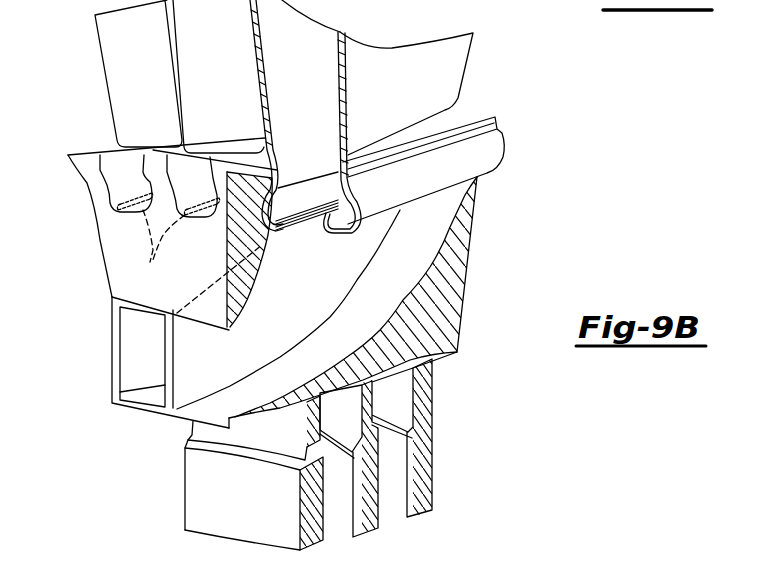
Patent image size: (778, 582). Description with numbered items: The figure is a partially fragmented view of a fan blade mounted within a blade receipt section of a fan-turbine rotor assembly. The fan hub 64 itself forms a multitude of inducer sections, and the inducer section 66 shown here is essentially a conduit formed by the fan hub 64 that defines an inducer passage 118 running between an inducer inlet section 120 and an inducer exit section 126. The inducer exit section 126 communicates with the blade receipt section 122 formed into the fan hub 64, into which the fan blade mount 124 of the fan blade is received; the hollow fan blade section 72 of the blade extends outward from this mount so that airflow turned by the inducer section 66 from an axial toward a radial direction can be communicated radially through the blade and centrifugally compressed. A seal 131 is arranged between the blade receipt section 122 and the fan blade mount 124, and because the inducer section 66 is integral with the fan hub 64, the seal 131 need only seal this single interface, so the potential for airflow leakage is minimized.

The fan blade section 72 is at (383, 80).
The fan blade mount 124 is at (483, 152).
The blade receipt section 122 is at (260, 202).
The inducer exit section 126 is at (323, 223).
The fan hub 64 is at (96, 283).
The inducer section 66 is at (96, 341).
The inducer inlet section 120 is at (147, 373).
The inducer passage 118 is at (282, 366).
The seal 131 is at (332, 224).